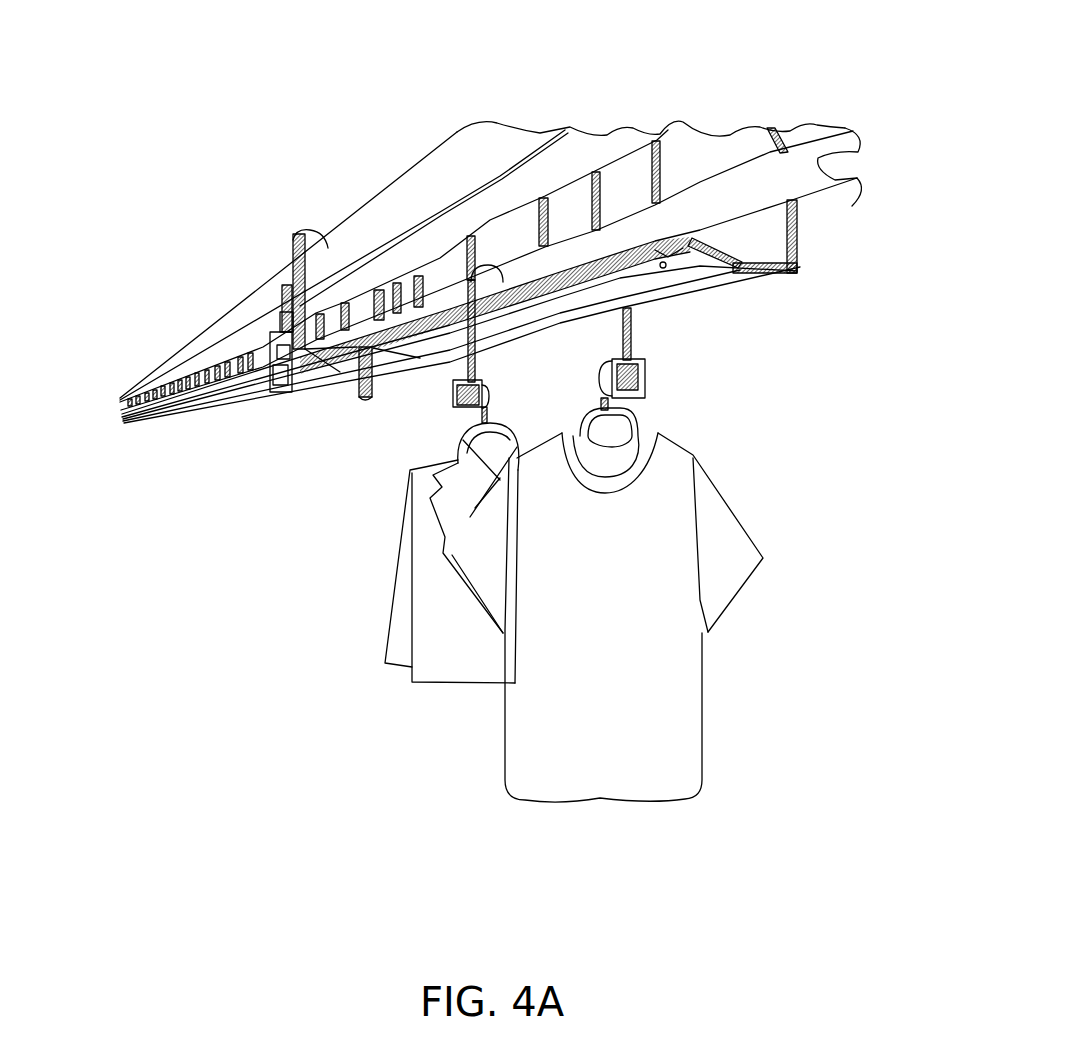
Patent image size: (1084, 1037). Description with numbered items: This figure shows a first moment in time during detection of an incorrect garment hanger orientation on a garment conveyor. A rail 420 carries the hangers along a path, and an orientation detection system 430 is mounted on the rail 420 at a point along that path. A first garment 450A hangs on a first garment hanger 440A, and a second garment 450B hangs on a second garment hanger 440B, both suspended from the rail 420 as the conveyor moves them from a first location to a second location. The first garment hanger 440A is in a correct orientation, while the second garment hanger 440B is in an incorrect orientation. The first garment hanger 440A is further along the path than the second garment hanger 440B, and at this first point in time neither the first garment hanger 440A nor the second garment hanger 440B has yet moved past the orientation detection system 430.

The rail 420 is at (734, 190).
The orientation detection system 430 is at (279, 388).
The first garment hanger 440A is at (450, 404).
The second garment hanger 440B is at (637, 328).
The first garment 450A is at (449, 662).
The second garment 450B is at (668, 656).